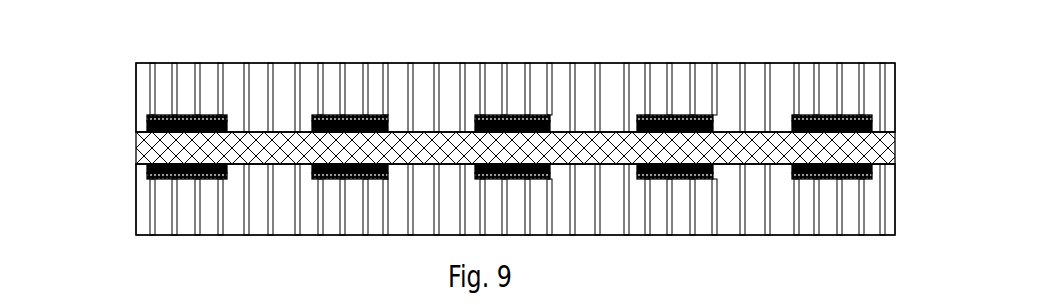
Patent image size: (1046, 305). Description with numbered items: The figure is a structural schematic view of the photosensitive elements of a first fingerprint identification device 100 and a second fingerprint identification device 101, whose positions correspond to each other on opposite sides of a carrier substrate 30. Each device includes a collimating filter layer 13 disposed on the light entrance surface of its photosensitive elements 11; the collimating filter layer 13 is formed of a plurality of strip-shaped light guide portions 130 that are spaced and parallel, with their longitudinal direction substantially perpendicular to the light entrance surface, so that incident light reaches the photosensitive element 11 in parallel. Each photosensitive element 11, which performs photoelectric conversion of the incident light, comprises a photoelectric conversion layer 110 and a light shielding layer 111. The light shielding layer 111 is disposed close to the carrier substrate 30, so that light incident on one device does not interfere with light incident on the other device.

The first fingerprint identification device 100 is at (902, 63).
The second fingerprint identification device 101 is at (902, 235).
The collimating filter layer 13 is at (139, 90).
The strip-shaped light guide portion 130 is at (150, 67).
The photosensitive element 11 is at (69, 108).
The photoelectric conversion layer 110 is at (147, 117).
The light shielding layer 111 is at (147, 128).
The carrier substrate 30 is at (137, 153).